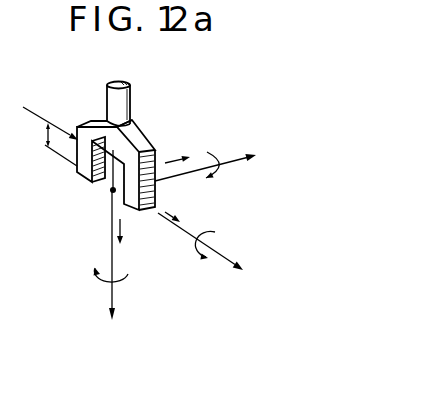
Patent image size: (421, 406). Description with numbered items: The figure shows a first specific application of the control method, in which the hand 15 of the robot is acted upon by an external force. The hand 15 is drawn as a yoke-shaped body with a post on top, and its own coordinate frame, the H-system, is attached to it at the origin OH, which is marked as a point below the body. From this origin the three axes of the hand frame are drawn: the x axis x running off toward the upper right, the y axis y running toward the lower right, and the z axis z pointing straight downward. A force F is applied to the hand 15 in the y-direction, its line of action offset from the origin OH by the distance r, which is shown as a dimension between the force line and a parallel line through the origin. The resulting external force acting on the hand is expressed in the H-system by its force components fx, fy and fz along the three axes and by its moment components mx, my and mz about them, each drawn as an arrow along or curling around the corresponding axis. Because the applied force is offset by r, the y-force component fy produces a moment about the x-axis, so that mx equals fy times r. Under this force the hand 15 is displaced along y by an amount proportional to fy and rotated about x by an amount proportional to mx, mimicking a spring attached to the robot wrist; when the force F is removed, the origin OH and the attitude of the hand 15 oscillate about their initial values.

The hand 15 is at (131, 100).
The force F is at (50, 86).
The moment arm r is at (54, 143).
The origin of the hand OH is at (113, 190).
The x-axis x is at (215, 158).
The y-axis y is at (209, 250).
The z-axis z is at (112, 246).
The x force component fx is at (176, 150).
The y force component fy is at (177, 205).
The z force component fz is at (129, 234).
The moment about x-axis mx is at (234, 171).
The moment about y-axis my is at (205, 258).
The moment about z-axis mz is at (129, 281).